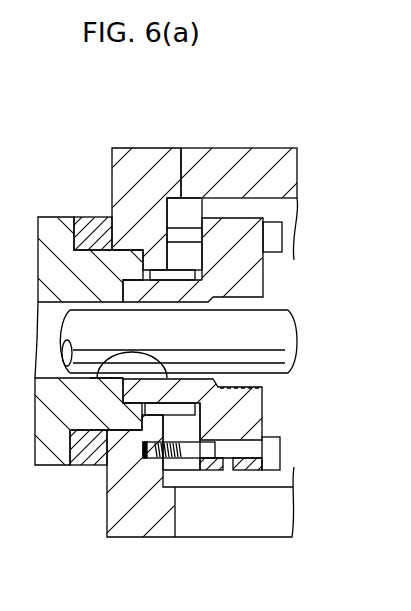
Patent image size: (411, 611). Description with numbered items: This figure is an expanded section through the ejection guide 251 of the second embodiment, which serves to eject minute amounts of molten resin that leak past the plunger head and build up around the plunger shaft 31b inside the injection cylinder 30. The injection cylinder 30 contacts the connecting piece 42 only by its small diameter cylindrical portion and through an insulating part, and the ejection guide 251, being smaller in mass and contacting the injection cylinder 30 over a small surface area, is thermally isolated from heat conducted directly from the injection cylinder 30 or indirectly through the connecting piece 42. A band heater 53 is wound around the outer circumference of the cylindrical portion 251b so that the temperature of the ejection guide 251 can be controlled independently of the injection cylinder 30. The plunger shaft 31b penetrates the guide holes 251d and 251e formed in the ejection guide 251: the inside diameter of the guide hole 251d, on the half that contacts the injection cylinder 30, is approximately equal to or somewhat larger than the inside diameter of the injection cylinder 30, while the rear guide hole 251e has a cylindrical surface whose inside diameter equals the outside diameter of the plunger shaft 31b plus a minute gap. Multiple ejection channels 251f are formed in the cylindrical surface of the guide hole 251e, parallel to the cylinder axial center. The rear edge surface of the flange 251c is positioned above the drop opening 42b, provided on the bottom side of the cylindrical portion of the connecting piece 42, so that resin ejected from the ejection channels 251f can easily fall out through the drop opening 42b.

The injection cylinder 30 is at (57, 200).
The connecting piece 42 is at (140, 148).
The drop opening 42b is at (235, 537).
The band heater 53 is at (178, 267).
The ejection guide 251 is at (262, 205).
The flange 251c is at (227, 217).
The ejection channels 251f is at (243, 301).
The guide hole 251e is at (267, 373).
The cylindrical portion 251b is at (167, 378).
The guide hole 251d is at (100, 372).
The plunger shaft 31b is at (292, 378).